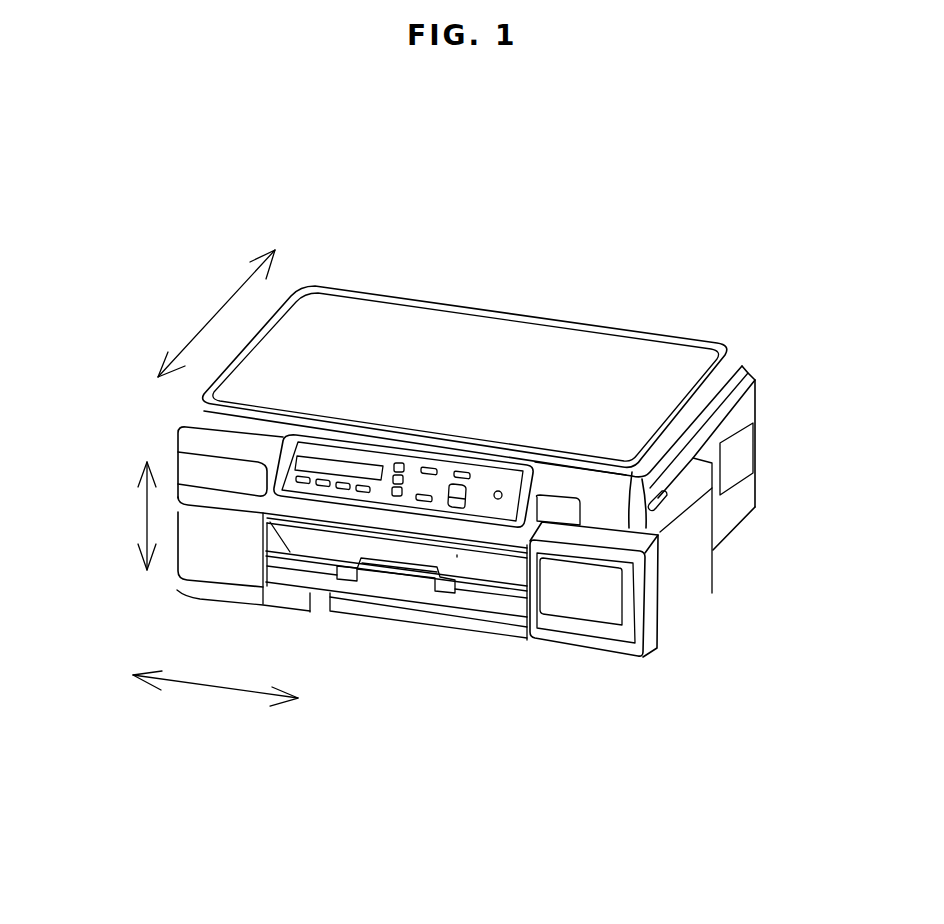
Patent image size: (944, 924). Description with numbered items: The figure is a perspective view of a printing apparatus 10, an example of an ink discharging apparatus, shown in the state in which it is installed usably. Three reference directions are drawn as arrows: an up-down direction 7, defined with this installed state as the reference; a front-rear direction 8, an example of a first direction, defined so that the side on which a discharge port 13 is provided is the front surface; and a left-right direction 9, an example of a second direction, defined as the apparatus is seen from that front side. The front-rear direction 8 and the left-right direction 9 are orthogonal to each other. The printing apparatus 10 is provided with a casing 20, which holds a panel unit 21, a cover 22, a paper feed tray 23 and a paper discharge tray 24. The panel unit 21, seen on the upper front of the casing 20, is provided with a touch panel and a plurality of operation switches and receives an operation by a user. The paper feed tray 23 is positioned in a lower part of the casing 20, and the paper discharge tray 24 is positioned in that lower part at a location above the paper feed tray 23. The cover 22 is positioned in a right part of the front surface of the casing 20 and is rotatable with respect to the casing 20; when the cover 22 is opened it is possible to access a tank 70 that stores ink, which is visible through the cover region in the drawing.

The up-down direction 7 is at (145, 518).
The front-rear direction 8 is at (200, 310).
The left-right direction 9 is at (215, 688).
The printing apparatus 10 is at (661, 304).
The discharge port 13 is at (457, 555).
The casing 20 is at (792, 409).
The panel unit 21 is at (300, 456).
The cover 22 is at (625, 628).
The paper feed tray 23 is at (395, 612).
The paper discharge tray 24 is at (316, 567).
The tank 70 is at (595, 598).